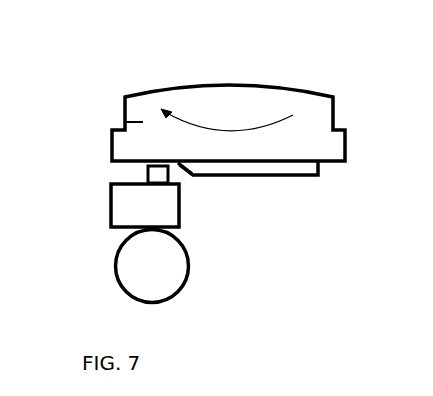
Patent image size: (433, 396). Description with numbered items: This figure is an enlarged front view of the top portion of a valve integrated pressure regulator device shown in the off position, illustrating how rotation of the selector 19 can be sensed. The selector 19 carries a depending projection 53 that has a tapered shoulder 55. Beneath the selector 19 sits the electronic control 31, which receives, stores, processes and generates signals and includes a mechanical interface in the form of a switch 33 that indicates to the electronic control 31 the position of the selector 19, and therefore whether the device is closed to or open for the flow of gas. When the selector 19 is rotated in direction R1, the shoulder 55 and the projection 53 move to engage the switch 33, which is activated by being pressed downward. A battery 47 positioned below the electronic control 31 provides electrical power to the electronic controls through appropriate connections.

The selector 19 is at (112, 133).
The direction of rotation R1 is at (227, 116).
The depending projection 53 is at (287, 170).
The tapered shoulder 55 is at (187, 172).
The switch 33 is at (147, 170).
The electronic control 31 is at (130, 205).
The battery 47 is at (140, 277).